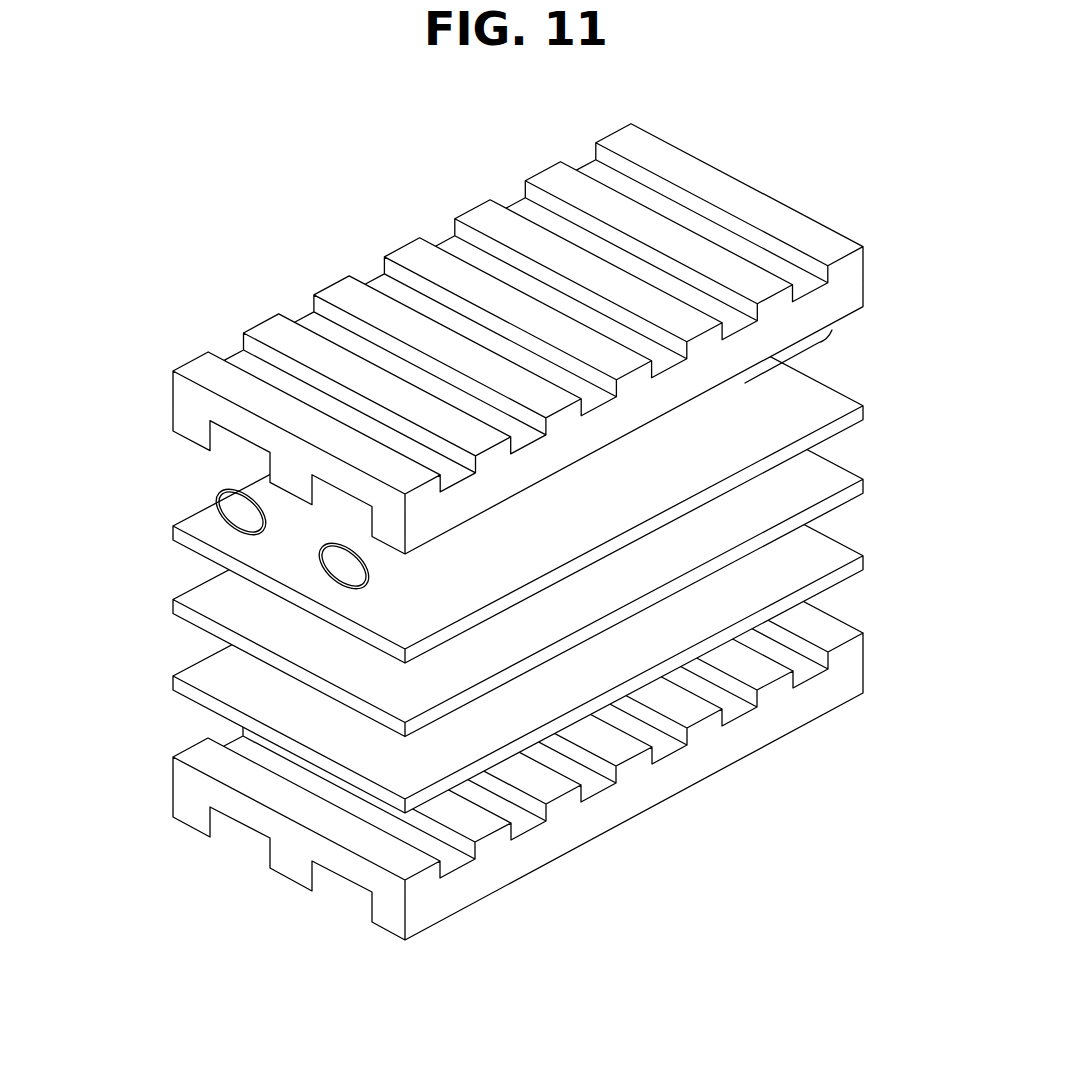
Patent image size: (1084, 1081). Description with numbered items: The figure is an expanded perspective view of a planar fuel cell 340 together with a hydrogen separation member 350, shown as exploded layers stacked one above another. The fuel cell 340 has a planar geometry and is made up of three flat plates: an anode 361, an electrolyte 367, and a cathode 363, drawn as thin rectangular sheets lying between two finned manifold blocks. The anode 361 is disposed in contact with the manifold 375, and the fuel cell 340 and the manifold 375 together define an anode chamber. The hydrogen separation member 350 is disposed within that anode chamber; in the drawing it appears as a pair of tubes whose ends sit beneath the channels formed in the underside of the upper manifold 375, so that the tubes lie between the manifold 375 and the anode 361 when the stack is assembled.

The fuel cell 340 is at (118, 296).
The manifold 375 is at (783, 214).
The hydrogen separation member 350 is at (225, 491).
The anode 361 is at (858, 407).
The electrolyte 367 is at (841, 481).
The cathode 363 is at (841, 556).